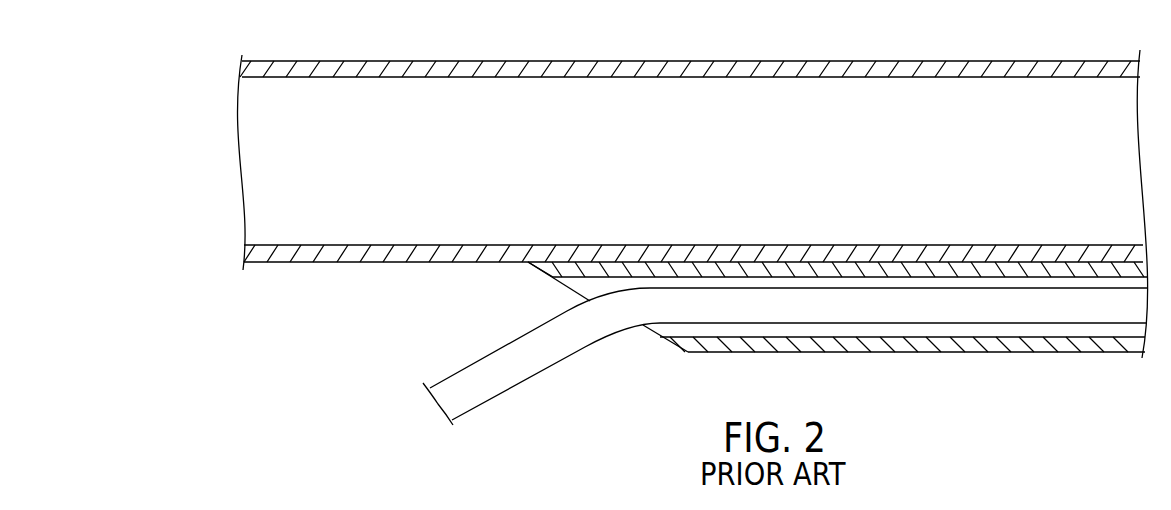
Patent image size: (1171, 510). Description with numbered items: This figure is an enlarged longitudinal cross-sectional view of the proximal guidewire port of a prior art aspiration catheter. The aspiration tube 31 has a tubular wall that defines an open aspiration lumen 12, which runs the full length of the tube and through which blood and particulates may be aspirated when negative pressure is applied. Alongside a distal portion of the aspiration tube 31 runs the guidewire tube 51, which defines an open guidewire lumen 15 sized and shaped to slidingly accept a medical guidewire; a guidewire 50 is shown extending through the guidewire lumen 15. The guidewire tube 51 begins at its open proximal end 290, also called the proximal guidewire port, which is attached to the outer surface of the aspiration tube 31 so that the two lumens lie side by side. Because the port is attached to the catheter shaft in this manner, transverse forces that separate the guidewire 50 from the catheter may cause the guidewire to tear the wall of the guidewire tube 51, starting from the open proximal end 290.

The aspiration lumen 12 is at (693, 173).
The aspiration tube 31 is at (941, 62).
The guidewire 50 is at (480, 368).
The open proximal end 290 is at (649, 327).
The guidewire lumen 15 is at (812, 338).
The guidewire tube 51 is at (1015, 353).